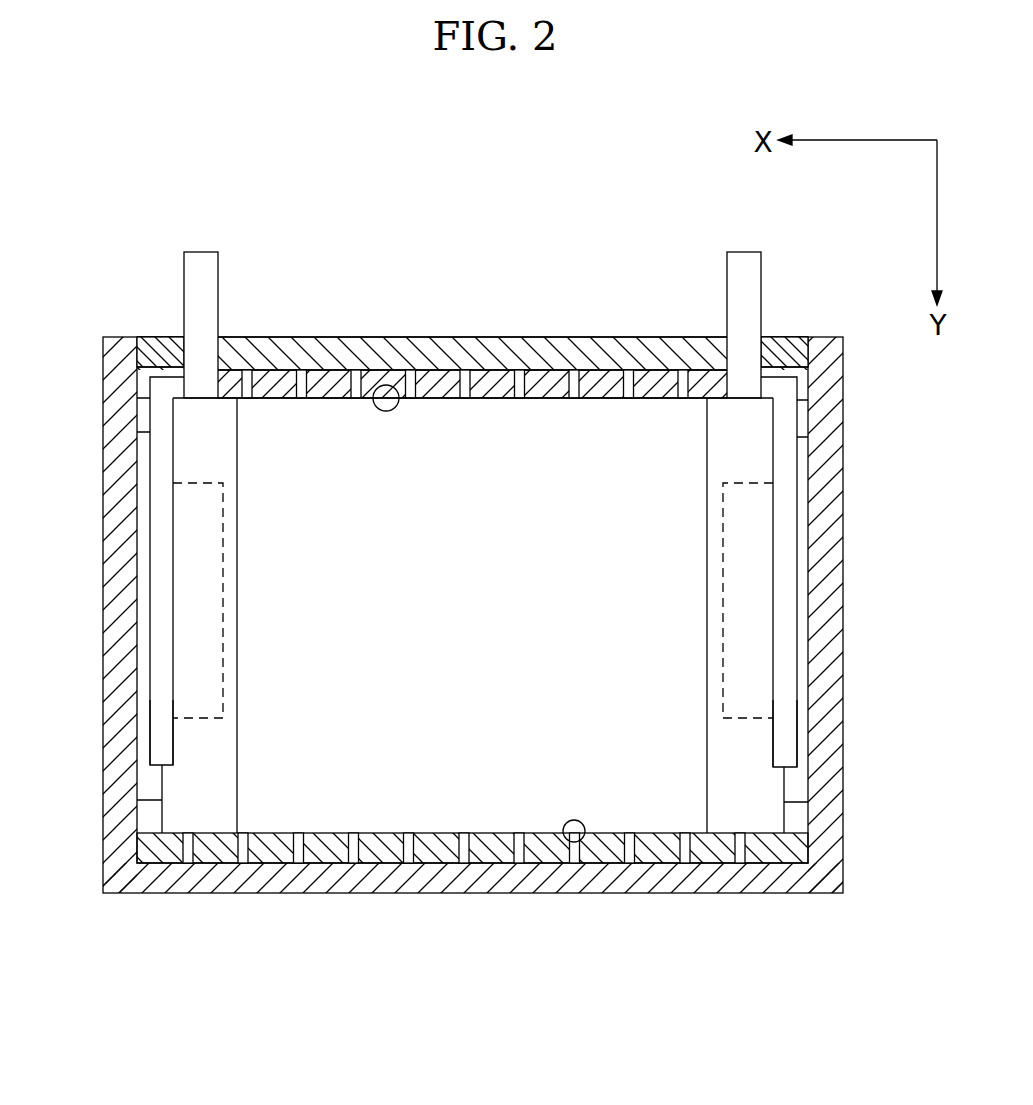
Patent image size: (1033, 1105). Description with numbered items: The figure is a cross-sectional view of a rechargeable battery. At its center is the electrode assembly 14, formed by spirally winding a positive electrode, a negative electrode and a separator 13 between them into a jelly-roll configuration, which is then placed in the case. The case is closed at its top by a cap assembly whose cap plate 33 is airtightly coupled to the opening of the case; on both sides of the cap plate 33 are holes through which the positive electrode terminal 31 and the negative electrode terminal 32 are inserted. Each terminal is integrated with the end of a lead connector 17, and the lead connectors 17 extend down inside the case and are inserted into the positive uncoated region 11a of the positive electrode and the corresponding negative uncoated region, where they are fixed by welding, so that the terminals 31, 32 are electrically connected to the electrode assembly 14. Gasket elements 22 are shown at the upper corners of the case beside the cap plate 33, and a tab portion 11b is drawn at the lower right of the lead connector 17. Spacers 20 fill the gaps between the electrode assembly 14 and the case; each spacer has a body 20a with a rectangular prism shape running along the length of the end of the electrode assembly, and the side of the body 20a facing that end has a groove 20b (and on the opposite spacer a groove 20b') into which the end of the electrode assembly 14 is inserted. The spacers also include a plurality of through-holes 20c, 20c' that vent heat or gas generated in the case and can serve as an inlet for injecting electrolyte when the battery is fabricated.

The separator 13 is at (843, 458).
The cap plate 33 is at (570, 338).
The gasket 22 is at (800, 372).
The positive electrode terminal 31 is at (203, 258).
The negative electrode terminal 32 is at (742, 258).
The first spacer 20 is at (244, 845).
The body 20a is at (276, 370).
The groove 20b is at (386, 306).
The through-hole 20c is at (670, 315).
The groove 20b' is at (589, 891).
The through-hole 20c' is at (375, 906).
The lead connector 17 is at (787, 578).
The positive uncoated region 11a is at (190, 752).
The second electrode tab 11b is at (765, 782).
The electrode assembly 14 is at (428, 746).